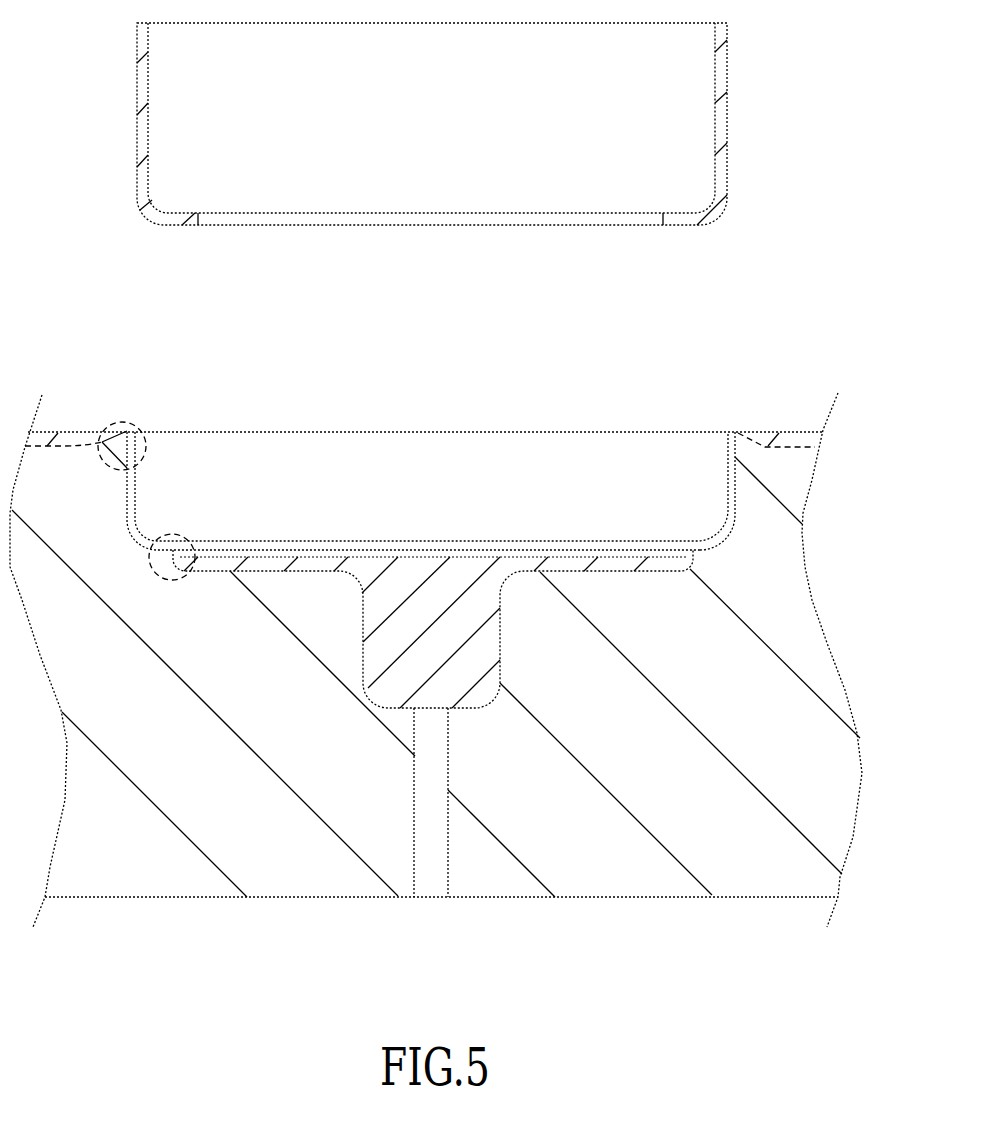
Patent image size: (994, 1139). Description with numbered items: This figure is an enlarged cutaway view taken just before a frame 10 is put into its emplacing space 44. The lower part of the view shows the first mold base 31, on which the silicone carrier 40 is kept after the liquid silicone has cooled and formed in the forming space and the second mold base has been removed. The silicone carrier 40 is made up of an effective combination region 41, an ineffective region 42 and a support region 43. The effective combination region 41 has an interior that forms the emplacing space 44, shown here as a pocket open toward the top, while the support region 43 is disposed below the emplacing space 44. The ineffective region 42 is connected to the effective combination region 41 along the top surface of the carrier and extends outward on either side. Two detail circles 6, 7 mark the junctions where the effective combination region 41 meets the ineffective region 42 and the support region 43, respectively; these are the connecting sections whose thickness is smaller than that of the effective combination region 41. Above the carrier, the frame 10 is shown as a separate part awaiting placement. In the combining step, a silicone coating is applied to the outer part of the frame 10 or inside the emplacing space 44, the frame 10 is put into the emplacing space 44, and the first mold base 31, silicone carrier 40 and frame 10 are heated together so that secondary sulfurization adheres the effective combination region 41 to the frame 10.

The frame 10 is at (143, 90).
The first mold base 31 is at (130, 885).
The ineffective region 42 is at (67, 436).
The silicone carrier 40 is at (218, 465).
The effective combination region 41 is at (733, 468).
The emplacing space 44 is at (377, 445).
The welded joint 6 is at (130, 422).
The adhesive layer 7 is at (180, 533).
The support region 43 is at (453, 675).